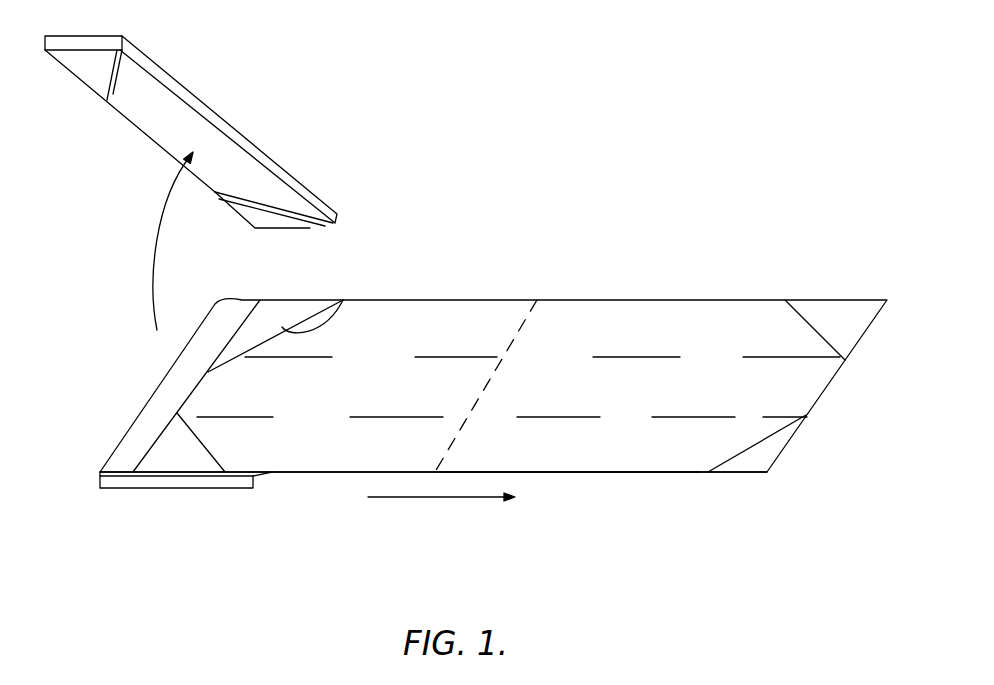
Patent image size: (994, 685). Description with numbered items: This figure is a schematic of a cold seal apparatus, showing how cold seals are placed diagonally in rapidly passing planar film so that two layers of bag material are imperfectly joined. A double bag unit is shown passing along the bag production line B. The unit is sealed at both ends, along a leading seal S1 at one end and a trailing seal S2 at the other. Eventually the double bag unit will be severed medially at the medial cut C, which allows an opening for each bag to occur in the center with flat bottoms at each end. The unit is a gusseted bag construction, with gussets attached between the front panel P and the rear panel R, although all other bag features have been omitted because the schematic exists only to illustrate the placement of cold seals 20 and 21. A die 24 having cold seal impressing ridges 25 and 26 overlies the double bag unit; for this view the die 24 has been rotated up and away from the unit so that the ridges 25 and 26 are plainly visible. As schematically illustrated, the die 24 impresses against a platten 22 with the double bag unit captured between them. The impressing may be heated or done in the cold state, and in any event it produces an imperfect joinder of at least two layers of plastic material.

The cold seal 20 is at (343, 300).
The cold seal 21 is at (210, 447).
The platten 22 is at (115, 493).
The die 24 is at (215, 110).
The cold seal impressing ridge 25 is at (113, 94).
The cold seal impressing ridge 26 is at (306, 228).
The leading seal S1 is at (828, 387).
The trailing seal S2 is at (183, 376).
The medial cut C is at (528, 320).
The front panel P is at (325, 399).
The rear panel R is at (310, 487).
The bag production line B is at (646, 496).